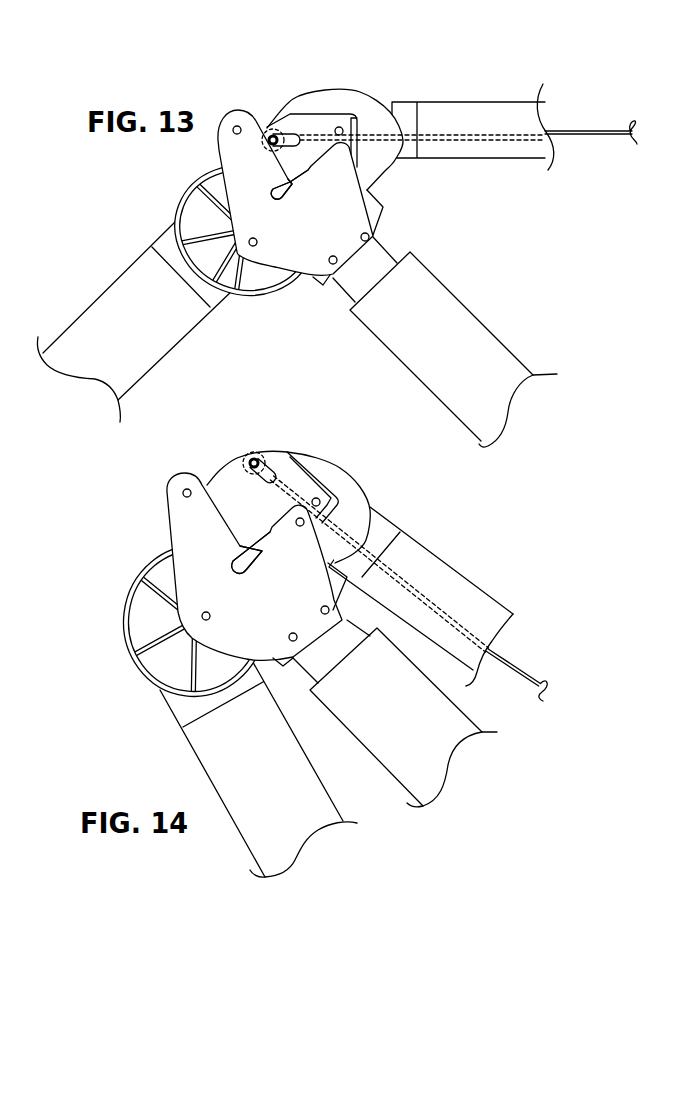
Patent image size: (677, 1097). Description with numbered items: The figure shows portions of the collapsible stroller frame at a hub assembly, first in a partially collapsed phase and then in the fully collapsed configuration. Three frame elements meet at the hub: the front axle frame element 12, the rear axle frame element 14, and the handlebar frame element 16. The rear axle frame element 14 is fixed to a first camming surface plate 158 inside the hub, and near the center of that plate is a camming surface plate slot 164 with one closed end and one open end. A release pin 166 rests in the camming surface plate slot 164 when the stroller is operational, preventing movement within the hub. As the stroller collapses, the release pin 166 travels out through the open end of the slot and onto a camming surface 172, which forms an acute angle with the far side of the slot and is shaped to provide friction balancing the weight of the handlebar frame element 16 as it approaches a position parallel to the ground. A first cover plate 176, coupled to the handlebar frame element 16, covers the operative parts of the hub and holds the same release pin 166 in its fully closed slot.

In FIG. 13, the front axle frame element 12 is at (113, 262).
In FIG. 14, the front axle frame element 12 is at (197, 760).
In FIG. 13, the rear axle frame element 14 is at (463, 290).
In FIG. 14, the rear axle frame element 14 is at (385, 768).
In FIG. 13, the handlebar frame element 16 is at (479, 98).
In FIG. 14, the handlebar frame element 16 is at (497, 598).
In FIG. 13, the first camming surface plate 158 is at (350, 213).
In FIG. 14, the first camming surface plate 158 is at (307, 558).
In FIG. 13, the camming surface plate slot 164 is at (300, 192).
In FIG. 14, the camming surface plate slot 164 is at (248, 563).
In FIG. 13, the release pin 166 is at (276, 130).
In FIG. 14, the release pin 166 is at (254, 454).
In FIG. 13, the camming surface 172 is at (262, 126).
In FIG. 13, the first cover plate 176 is at (313, 128).
In FIG. 14, the first cover plate 176 is at (226, 478).